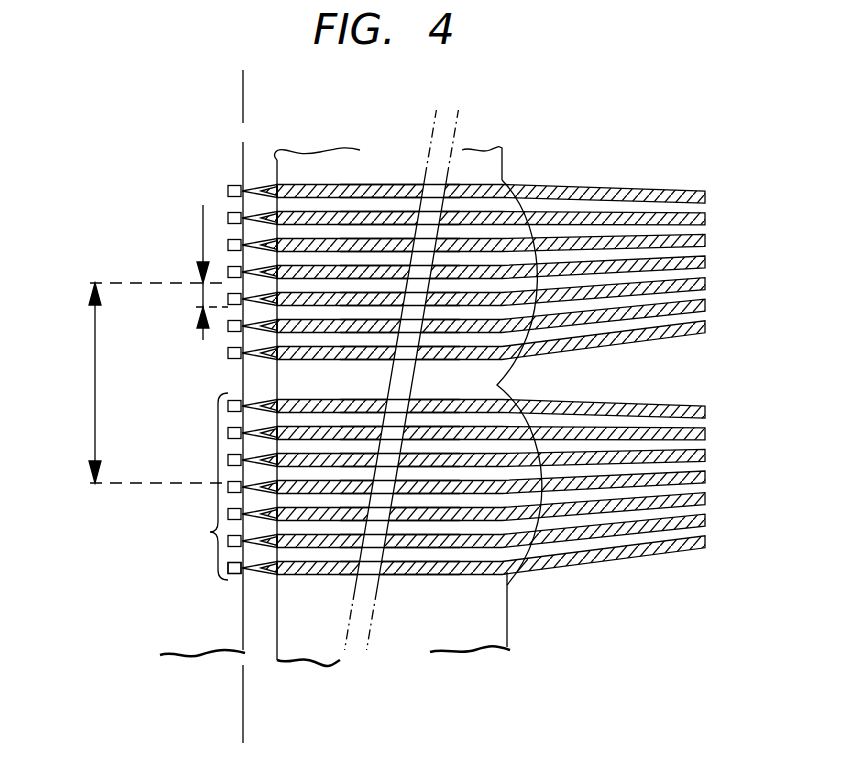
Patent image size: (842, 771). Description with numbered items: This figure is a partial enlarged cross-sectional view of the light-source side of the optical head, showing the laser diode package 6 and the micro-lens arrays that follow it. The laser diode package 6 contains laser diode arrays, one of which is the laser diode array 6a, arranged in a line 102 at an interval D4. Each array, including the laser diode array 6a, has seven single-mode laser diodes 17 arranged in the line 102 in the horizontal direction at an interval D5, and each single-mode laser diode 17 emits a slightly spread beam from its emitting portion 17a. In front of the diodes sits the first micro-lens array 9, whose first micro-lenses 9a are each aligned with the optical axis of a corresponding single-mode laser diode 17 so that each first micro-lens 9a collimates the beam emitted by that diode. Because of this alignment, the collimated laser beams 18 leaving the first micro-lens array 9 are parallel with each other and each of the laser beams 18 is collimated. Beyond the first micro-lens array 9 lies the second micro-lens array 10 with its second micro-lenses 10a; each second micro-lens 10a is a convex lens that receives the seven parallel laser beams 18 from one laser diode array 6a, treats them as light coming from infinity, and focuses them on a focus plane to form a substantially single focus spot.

The laser diode package 6 is at (245, 160).
The laser diode array 6a is at (193, 486).
The first micro-lens array 9 is at (368, 180).
The first micro-lens 9a is at (312, 594).
The second micro-lens array 10 is at (476, 148).
The second micro-lens 10a is at (560, 170).
The single-mode laser diode 17 is at (241, 189).
The emitting portion 17a is at (249, 574).
The collimated laser beams 18 is at (471, 545).
The line 102 is at (245, 733).
The interval between laser diode arrays D4 is at (156, 383).
The interval between laser diodes D5 is at (203, 298).